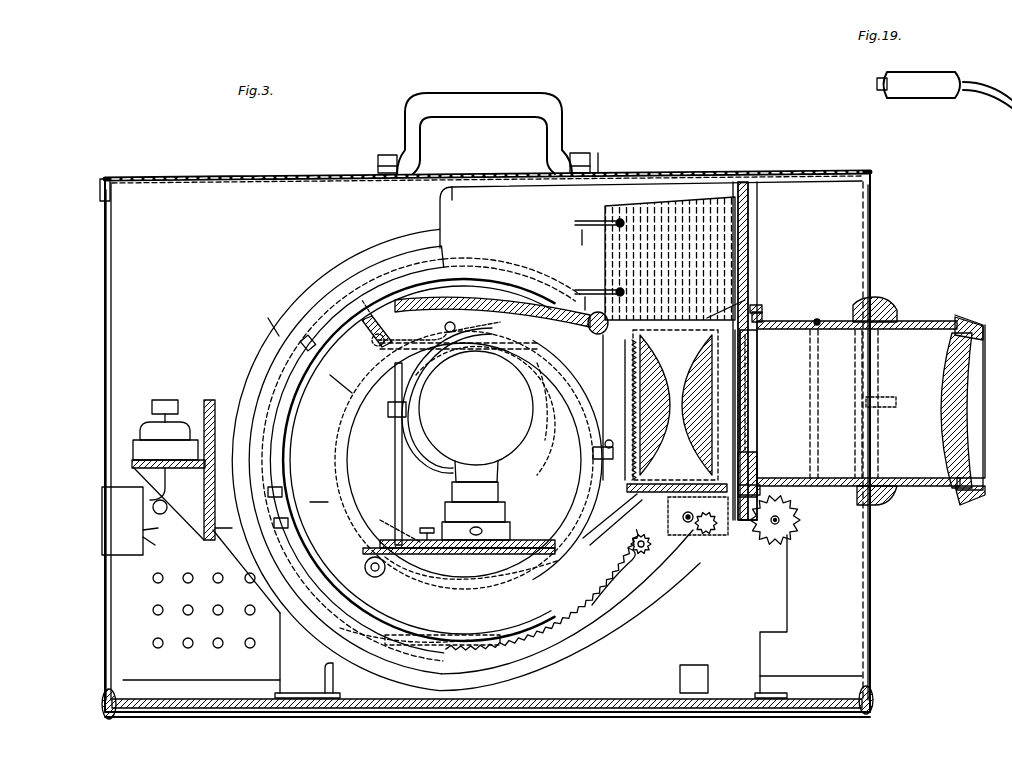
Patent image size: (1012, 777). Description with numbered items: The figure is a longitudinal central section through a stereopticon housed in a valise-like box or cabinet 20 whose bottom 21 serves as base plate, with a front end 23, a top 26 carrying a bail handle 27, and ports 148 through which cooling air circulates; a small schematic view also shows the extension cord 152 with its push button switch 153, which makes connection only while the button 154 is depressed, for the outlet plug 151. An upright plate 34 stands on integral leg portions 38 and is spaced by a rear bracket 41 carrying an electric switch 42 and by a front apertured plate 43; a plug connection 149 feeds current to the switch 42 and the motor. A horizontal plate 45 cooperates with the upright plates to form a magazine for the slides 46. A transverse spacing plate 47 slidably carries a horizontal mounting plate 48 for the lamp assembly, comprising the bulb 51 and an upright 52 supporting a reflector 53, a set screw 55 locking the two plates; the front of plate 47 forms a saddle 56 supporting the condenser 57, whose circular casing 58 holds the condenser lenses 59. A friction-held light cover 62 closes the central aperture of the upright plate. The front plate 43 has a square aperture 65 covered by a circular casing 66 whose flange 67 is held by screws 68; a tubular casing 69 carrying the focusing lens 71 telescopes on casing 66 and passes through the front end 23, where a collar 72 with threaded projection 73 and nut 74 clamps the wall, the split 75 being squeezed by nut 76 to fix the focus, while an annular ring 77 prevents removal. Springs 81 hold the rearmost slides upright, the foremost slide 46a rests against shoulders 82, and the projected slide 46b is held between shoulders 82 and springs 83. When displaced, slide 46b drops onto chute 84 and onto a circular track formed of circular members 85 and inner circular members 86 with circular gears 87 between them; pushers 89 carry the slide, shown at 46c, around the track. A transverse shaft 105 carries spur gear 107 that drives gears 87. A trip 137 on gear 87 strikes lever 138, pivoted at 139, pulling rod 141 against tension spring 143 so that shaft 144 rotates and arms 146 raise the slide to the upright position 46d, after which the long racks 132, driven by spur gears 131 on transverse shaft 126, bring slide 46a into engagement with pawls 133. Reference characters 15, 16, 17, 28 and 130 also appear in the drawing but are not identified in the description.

In FIG. 3, the box or cabinet 20 is at (228, 176).
In FIG. 3, the top 26 is at (278, 176).
In FIG. 3, the bail handle 27 is at (484, 100).
In FIG. 3, the casing side wall 28 is at (105, 298).
In FIG. 3, the end 23 is at (869, 242).
In FIG. 3, the bottom 21 is at (270, 716).
In FIG. 3, the integral leg portions 38 is at (282, 672).
In FIG. 3, the slide 46d is at (620, 212).
In FIG. 3, the pawls 133 is at (740, 206).
In FIG. 3, the foremost slide 46a is at (748, 222).
In FIG. 3, the slides 46 is at (748, 240).
In FIG. 3, the front apertured plate 43 is at (750, 260).
In FIG. 3, the horizontal plate 45 is at (750, 284).
In FIG. 3, the flange 67 is at (758, 304).
In FIG. 3, the screws 68 is at (762, 316).
In FIG. 3, the arms 146 is at (600, 219).
In FIG. 3, the springs 81 is at (586, 228).
In FIG. 3, the shaft 144 is at (590, 297).
In FIG. 3, the circular casing 66 is at (790, 318).
In FIG. 3, the annular ring 77 is at (820, 309).
In FIG. 3, the nut 76 is at (878, 312).
In FIG. 3, the tubular casing 69 is at (930, 320).
In FIG. 3, the focusing lens 71 is at (968, 410).
In FIG. 3, the split 75 is at (897, 403).
In FIG. 3, the collar 72 is at (862, 492).
In FIG. 3, the nut 74 is at (880, 505).
In FIG. 3, the threaded projection 73 is at (935, 490).
In FIG. 3, the long racks 132 is at (742, 365).
In FIG. 3, the slide 46b is at (748, 386).
In FIG. 3, the springs 83 is at (750, 400).
In FIG. 3, the shoulders 82 is at (750, 414).
In FIG. 3, the square aperture 65 is at (752, 432).
In FIG. 3, the condenser lenses 59 is at (668, 372).
In FIG. 3, the circular casing 58 is at (676, 483).
In FIG. 3, the tension spring 143 is at (618, 372).
In FIG. 3, the saddle 56 is at (664, 494).
In FIG. 3, the condenser 57 is at (698, 516).
In FIG. 3, the spur gear 107 is at (696, 525).
In FIG. 3, the upright plate 34 is at (298, 288).
In FIG. 3, the chute 84 is at (690, 577).
In FIG. 3, the circular gears 87 is at (280, 380).
In FIG. 3, the circular members 85 is at (405, 270).
In FIG. 3, the pushers 89 is at (312, 330).
In FIG. 3, the inner circular members 86 is at (295, 417).
In FIG. 3, the trip 137 is at (598, 453).
In FIG. 3, the light cover 62 is at (345, 456).
In FIG. 3, the slide 46c is at (432, 628).
In FIG. 3, the transverse shaft 105 is at (548, 590).
In FIG. 3, the slide bar 130 is at (476, 300).
In FIG. 3, the lever 138 is at (366, 298).
In FIG. 3, the pivot 139 is at (436, 333).
In FIG. 3, the rod 141 is at (486, 410).
In FIG. 3, the clamp 15 is at (304, 354).
In FIG. 3, the clip 16 is at (271, 503).
In FIG. 3, the screw 17 is at (270, 512).
In FIG. 3, the bulb 51 is at (498, 430).
In FIG. 3, the reflector 53 is at (430, 462).
In FIG. 3, the transverse spacing plate 47 is at (460, 566).
In FIG. 3, the set screw 55 is at (424, 526).
In FIG. 3, the upright 52 is at (393, 442).
In FIG. 3, the horizontal mounting plate 48 is at (392, 540).
In FIG. 3, the rear bracket 41 is at (209, 400).
In FIG. 3, the electric switch 42 is at (144, 418).
In FIG. 3, the plug connection 149 is at (120, 507).
In FIG. 3, the outlet plug 151 is at (140, 547).
In FIG. 3, the ports 148 is at (188, 616).
In FIG. 3, the spur gears 131 is at (798, 516).
In FIG. 3, the transverse shaft 126 is at (780, 522).
In FIG. 19, the push button switch 153 is at (923, 72).
In FIG. 19, the button 154 is at (880, 78).
In FIG. 19, the extension cord 152 is at (988, 80).